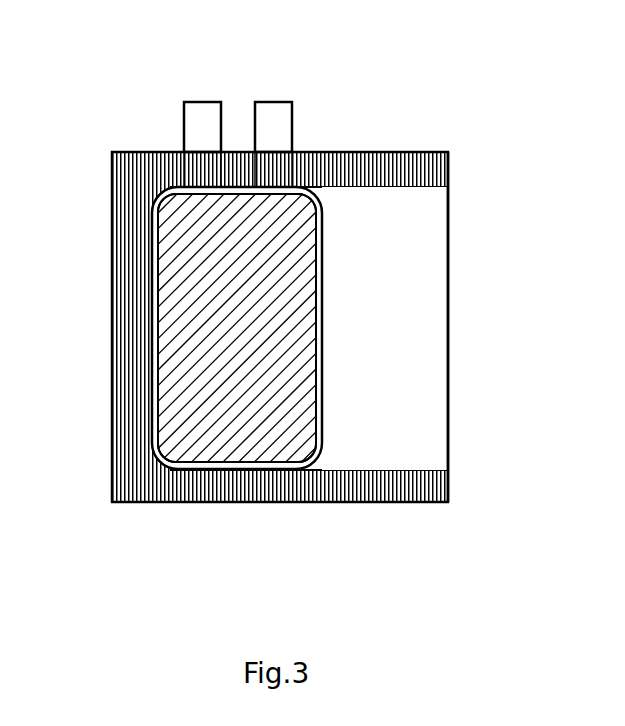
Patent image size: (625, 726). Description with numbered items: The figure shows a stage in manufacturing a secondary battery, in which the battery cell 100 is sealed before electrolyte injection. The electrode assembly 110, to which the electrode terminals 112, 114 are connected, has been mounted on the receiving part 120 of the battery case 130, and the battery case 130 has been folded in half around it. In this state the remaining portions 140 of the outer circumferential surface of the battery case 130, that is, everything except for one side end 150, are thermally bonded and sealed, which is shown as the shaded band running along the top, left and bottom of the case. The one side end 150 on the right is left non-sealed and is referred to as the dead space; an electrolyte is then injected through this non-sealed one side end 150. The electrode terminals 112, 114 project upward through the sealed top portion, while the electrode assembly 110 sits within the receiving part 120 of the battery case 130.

The battery cell 100 is at (387, 85).
The electrode assembly 110 is at (173, 248).
The electrode terminal 112 is at (202, 107).
The electrode terminal 114 is at (272, 107).
The receiving part 120 is at (154, 387).
The battery case 130 is at (113, 313).
The remaining portions 140 is at (440, 170).
The one side end (dead space) 150 is at (440, 293).